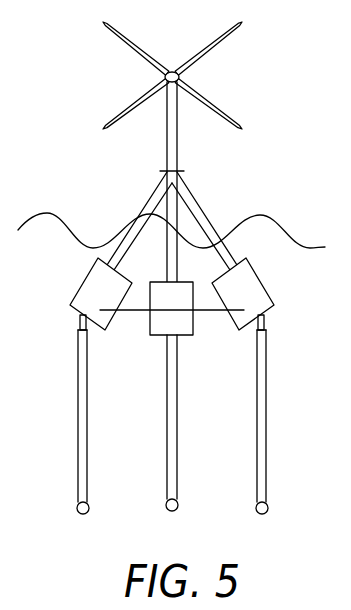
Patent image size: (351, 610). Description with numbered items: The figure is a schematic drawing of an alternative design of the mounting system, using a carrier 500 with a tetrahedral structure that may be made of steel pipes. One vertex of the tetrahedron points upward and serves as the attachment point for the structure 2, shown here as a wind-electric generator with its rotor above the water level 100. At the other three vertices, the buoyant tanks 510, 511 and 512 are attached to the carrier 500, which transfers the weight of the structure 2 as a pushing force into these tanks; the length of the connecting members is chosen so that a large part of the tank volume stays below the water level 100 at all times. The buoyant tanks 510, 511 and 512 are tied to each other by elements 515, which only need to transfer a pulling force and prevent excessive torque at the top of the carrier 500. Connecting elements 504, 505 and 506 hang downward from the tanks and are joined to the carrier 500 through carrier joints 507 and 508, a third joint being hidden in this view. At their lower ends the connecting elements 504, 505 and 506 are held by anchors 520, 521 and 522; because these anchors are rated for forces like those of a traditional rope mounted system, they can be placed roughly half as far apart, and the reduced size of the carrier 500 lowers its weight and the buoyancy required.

The structure 2 is at (164, 78).
The water level 100 is at (268, 212).
The carrier 500 is at (165, 178).
The connecting element 504 is at (78, 373).
The connecting element 505 is at (167, 442).
The connecting element 506 is at (257, 442).
The carrier joint 507 is at (80, 322).
The carrier joint 508 is at (264, 322).
The buoyant tank 510 is at (90, 285).
The buoyant tank 511 is at (185, 332).
The buoyant tank 512 is at (255, 283).
The element 515 is at (145, 313).
The anchor 520 is at (77, 508).
The anchor 521 is at (166, 505).
The anchor 522 is at (256, 508).